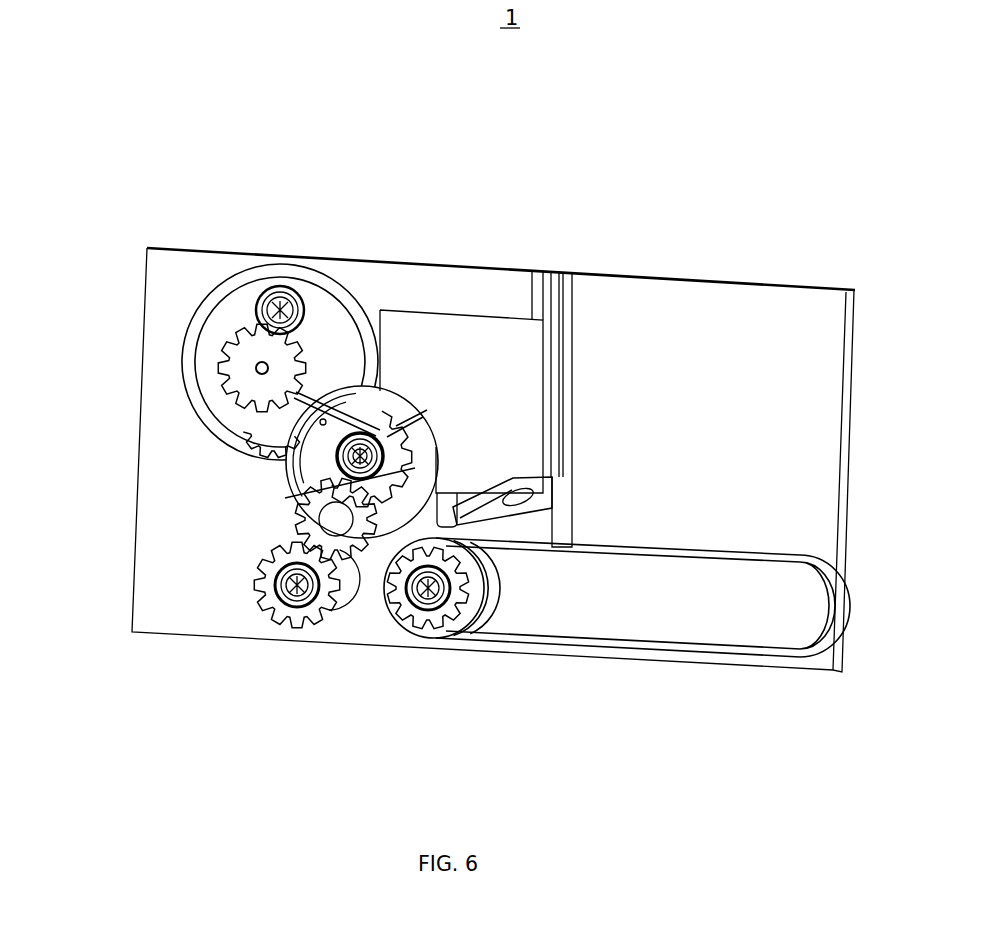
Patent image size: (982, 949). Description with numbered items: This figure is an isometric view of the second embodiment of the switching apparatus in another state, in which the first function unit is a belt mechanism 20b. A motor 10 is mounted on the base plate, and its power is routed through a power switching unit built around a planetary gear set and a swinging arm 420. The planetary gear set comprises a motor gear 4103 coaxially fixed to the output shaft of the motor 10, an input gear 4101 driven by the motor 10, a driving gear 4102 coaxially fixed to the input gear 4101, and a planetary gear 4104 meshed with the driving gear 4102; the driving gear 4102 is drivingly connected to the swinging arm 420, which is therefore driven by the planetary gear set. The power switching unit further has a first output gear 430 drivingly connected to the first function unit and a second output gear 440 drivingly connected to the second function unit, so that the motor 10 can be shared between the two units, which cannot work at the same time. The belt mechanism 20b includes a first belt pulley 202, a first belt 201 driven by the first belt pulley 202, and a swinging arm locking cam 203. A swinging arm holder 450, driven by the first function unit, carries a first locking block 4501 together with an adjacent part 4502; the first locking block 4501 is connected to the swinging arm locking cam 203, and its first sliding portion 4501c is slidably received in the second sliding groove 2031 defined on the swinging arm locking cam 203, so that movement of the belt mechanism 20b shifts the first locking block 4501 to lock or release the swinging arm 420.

The motor 10 is at (303, 405).
The swinging arm 420 is at (360, 387).
The input gear 4101 is at (335, 478).
The driving gear 4102 is at (399, 418).
The motor gear 4103 is at (238, 392).
The planetary gear 4104 is at (362, 548).
The second output gear 440 is at (263, 590).
The first output gear 430 is at (421, 618).
The swinging arm holder 450 is at (610, 175).
The first locking block 4501 is at (458, 327).
The second support plate 4502 is at (563, 275).
The first sliding portion 4501c is at (565, 475).
The second sliding groove 2031 is at (540, 508).
The first belt pulley 202 is at (497, 603).
The swinging arm locking cam 203 is at (583, 560).
The first belt 201 is at (700, 545).
The belt mechanism 20b is at (747, 750).